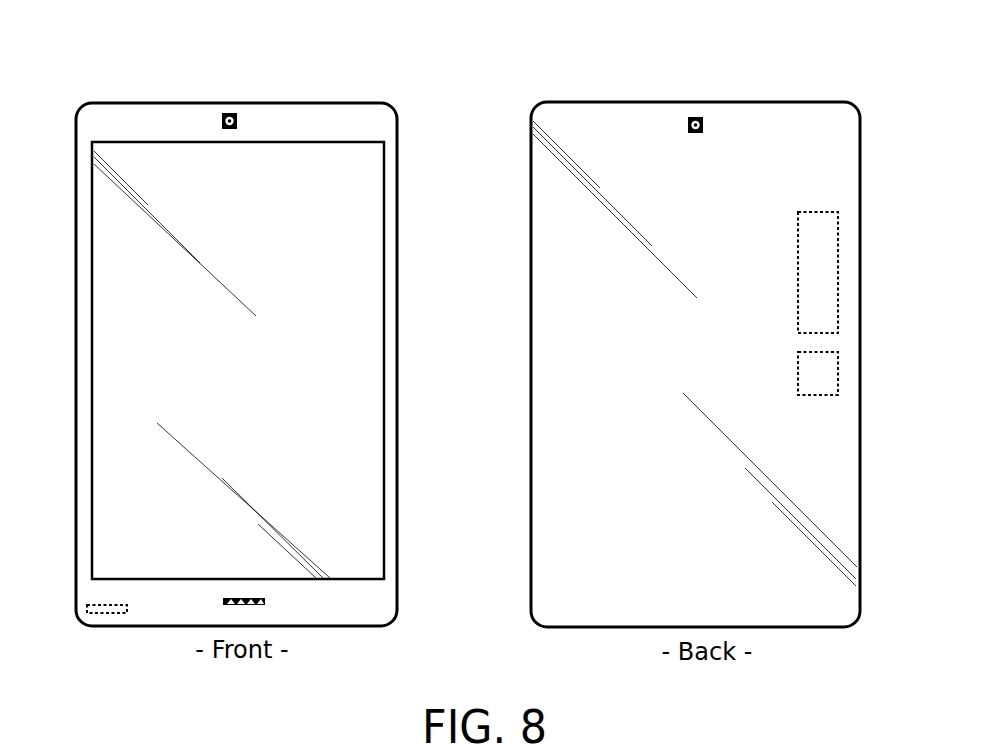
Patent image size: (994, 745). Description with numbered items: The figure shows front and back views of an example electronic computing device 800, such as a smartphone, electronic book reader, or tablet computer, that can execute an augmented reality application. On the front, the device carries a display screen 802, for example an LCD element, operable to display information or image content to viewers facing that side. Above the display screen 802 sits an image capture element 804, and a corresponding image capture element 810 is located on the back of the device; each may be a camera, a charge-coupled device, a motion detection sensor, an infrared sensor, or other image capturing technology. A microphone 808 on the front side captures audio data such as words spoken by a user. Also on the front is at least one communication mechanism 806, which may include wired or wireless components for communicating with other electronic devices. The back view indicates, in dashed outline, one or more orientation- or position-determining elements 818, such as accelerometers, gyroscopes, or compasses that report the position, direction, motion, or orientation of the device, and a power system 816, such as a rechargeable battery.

The electronic computing device 800 is at (889, 114).
The display screen 802 is at (92, 234).
The image capture element 804 is at (229, 113).
The communication mechanism 806 is at (110, 614).
The microphone 808 is at (262, 604).
The image capture element 810 is at (694, 116).
The power system 816 is at (838, 378).
The orientation- or position-determining elements 818 is at (838, 293).